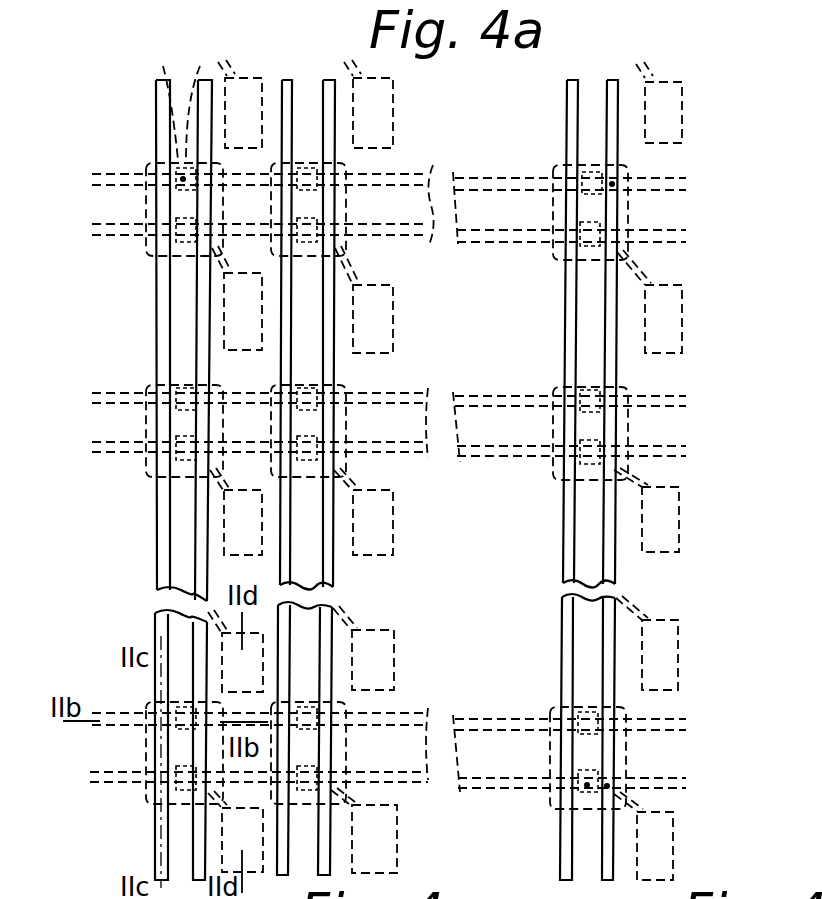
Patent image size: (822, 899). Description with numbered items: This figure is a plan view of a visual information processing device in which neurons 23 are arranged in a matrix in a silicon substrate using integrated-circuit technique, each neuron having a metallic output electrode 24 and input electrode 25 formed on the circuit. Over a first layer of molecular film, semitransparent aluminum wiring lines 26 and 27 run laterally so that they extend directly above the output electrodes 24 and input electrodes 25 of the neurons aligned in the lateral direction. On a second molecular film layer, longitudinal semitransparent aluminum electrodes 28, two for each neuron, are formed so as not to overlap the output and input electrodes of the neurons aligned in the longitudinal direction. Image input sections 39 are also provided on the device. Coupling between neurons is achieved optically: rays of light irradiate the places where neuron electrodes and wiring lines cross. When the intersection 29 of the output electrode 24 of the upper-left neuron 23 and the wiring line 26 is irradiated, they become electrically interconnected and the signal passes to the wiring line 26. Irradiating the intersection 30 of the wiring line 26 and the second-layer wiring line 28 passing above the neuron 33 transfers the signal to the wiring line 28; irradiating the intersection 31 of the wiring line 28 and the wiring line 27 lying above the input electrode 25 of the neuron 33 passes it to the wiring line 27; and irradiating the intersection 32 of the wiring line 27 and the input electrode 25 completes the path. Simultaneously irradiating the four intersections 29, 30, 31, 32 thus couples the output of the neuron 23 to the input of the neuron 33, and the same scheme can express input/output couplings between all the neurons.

The neuron 23 is at (161, 99).
The output electrode 24 is at (205, 99).
The input electrode 25 is at (178, 218).
The wiring line 26 is at (432, 176).
The wiring line 27 is at (428, 240).
The semitransparent aluminum electrode 28 is at (101, 240).
The intersection 29 is at (183, 179).
The intersection 30 is at (614, 184).
The intersection 31 is at (607, 786).
The intersection 32 is at (587, 785).
The neuron 33 is at (618, 707).
The image input section 39 is at (222, 330).